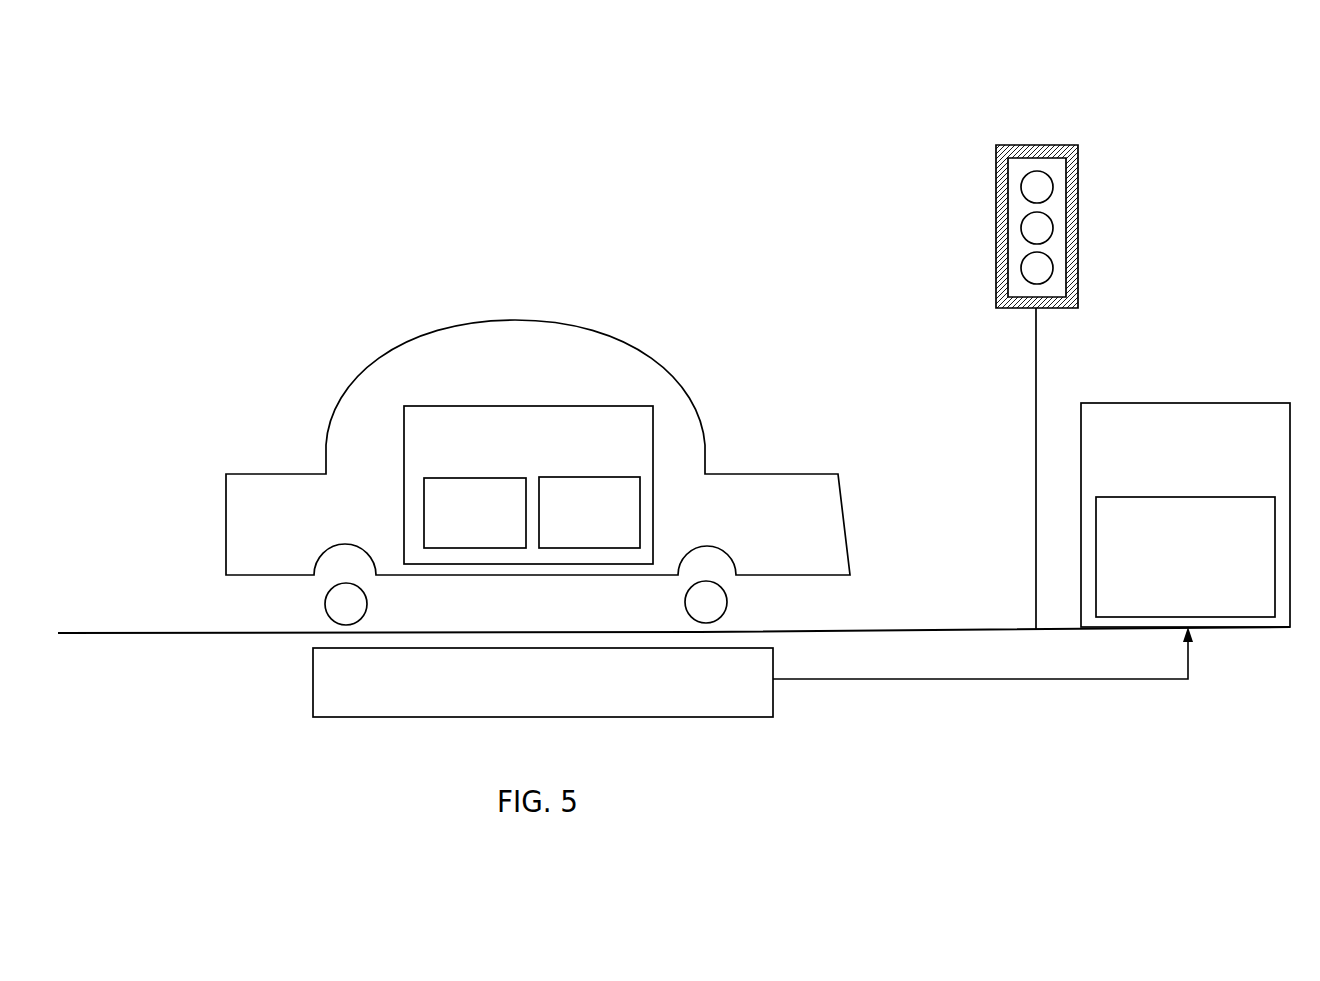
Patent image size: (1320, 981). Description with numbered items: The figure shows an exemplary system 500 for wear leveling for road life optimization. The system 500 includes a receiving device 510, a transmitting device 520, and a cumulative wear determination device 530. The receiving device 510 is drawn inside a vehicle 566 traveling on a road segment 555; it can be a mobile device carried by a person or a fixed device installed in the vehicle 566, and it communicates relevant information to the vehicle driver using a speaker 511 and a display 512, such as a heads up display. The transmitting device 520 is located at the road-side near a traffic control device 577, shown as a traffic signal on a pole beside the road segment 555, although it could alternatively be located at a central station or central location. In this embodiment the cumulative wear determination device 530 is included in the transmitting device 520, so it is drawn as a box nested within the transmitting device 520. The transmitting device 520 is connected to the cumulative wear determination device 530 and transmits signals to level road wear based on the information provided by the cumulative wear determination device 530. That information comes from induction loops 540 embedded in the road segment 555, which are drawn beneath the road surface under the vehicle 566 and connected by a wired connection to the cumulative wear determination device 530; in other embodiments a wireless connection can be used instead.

The system 500 is at (687, 80).
The receiving device 510 is at (550, 464).
The speaker 511 is at (493, 540).
The display 512 is at (608, 540).
The transmitting device 520 is at (1203, 488).
The cumulative wear determination device 530 is at (1203, 603).
The induction loops 540 is at (562, 708).
The road segment 555 is at (142, 633).
The vehicle 566 is at (346, 389).
The traffic control device 577 is at (1078, 213).